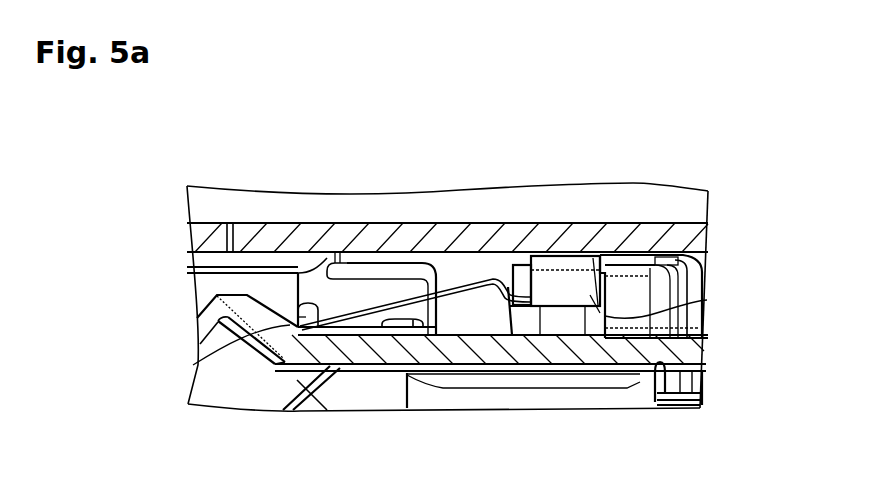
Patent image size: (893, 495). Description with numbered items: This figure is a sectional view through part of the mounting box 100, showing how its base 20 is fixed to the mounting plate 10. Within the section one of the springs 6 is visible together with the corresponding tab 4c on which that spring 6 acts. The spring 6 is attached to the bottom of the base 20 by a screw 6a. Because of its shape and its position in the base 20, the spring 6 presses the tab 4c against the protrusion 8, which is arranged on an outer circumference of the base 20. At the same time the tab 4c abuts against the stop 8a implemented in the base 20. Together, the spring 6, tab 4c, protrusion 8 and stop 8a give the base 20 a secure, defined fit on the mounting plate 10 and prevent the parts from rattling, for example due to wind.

The mounting box 100 is at (178, 303).
The mounting plate 10 is at (395, 240).
The spring 6 is at (462, 270).
The protrusion 8 is at (527, 270).
The tab 4c is at (562, 285).
The stop 8a is at (707, 300).
The screw 6a is at (198, 366).
The base 20 is at (690, 352).